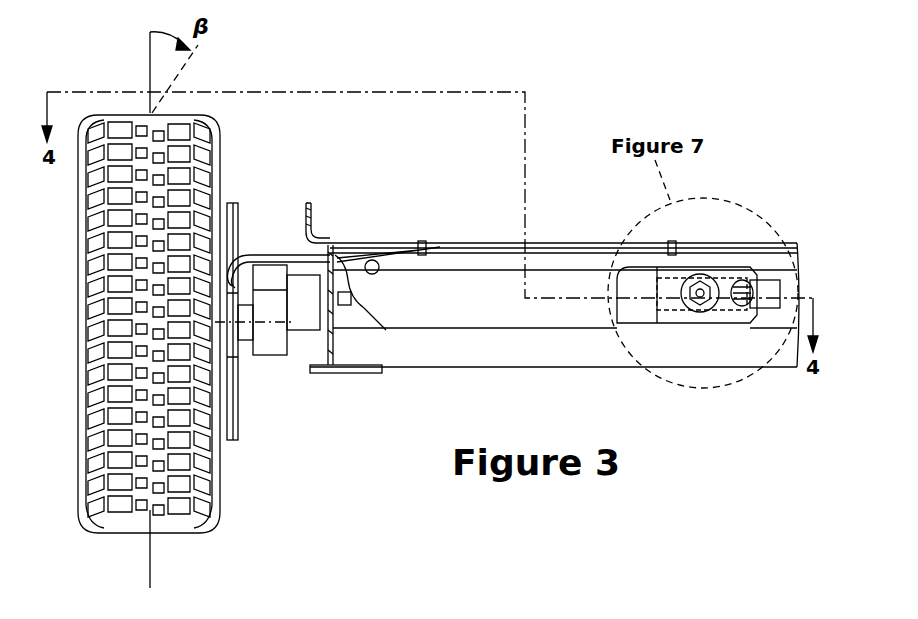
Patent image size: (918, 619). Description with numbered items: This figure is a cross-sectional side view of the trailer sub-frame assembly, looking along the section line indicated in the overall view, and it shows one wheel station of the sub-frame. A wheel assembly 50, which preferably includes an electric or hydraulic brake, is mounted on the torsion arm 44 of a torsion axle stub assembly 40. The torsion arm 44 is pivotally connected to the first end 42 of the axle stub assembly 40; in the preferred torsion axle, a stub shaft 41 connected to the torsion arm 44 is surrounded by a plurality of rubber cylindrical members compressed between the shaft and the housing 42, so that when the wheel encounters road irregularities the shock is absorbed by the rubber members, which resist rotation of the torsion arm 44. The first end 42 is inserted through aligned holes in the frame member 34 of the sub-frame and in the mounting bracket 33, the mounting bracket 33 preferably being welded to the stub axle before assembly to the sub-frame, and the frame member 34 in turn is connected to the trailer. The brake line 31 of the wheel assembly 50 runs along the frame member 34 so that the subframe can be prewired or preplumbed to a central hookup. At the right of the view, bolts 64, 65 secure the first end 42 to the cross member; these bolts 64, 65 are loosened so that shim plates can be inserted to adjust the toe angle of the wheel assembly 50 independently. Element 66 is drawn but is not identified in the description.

The brake lines 31 is at (548, 259).
The mounting bracket 33 is at (325, 346).
The frame member 34 is at (314, 234).
The torsion axle stub assembly 40 is at (275, 236).
The stub shaft 41 is at (293, 252).
The first end of axle stub assembly 42 is at (558, 306).
The torsion arm 44 is at (272, 345).
The wheel assembly 50 is at (70, 289).
The mounting bolt 64 is at (737, 312).
The mounting bolt 65 is at (687, 312).
The clip 66 is at (350, 300).